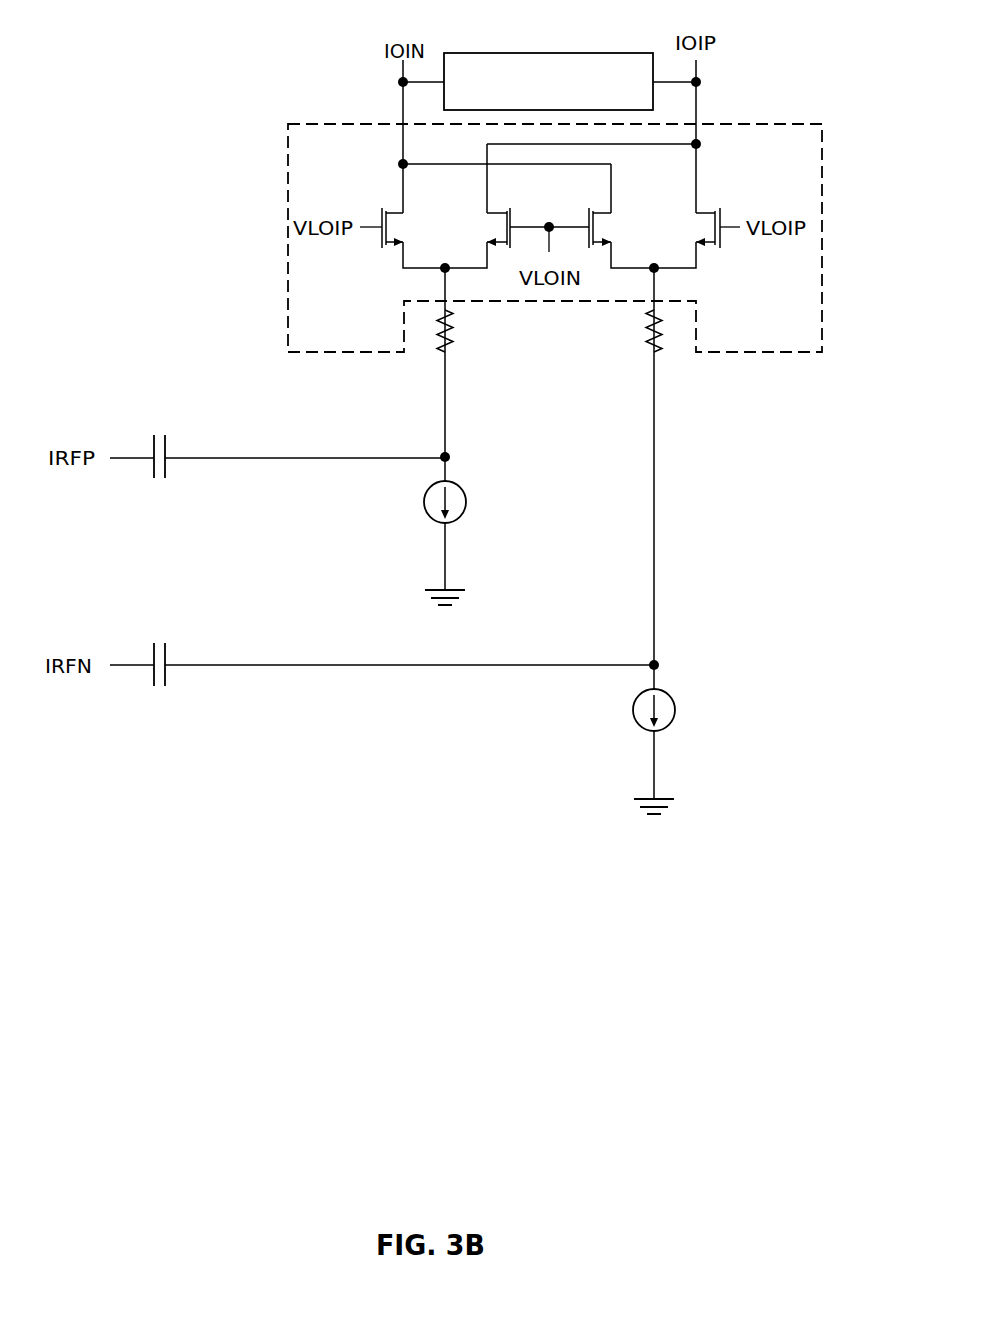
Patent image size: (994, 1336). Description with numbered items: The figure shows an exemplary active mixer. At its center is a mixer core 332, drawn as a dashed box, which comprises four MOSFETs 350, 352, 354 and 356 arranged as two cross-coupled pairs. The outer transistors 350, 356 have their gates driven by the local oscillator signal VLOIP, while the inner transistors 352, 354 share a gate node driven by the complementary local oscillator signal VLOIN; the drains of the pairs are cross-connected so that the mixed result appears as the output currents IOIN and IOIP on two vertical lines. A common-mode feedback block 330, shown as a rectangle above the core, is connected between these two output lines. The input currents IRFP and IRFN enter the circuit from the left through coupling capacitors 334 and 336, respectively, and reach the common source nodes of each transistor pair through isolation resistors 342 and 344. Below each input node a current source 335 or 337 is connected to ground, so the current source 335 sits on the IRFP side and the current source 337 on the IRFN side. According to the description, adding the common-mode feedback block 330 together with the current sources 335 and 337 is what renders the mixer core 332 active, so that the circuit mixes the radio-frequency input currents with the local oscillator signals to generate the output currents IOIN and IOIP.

The common-mode feedback block 330 is at (528, 53).
The mixer core 332 is at (798, 124).
The coupling capacitor 334 is at (166, 443).
The current source 335 is at (464, 509).
The coupling capacitor 336 is at (166, 650).
The current source 337 is at (673, 717).
The resistor 342 is at (453, 330).
The resistor 344 is at (646, 330).
The MOSFET 350 is at (397, 207).
The MOSFET 352 is at (504, 211).
The MOSFET 354 is at (603, 211).
The MOSFET 356 is at (703, 207).